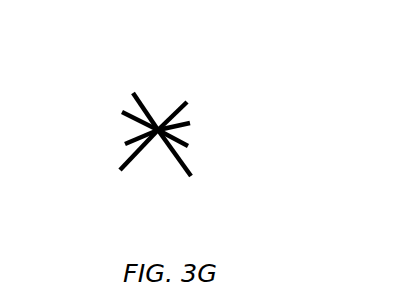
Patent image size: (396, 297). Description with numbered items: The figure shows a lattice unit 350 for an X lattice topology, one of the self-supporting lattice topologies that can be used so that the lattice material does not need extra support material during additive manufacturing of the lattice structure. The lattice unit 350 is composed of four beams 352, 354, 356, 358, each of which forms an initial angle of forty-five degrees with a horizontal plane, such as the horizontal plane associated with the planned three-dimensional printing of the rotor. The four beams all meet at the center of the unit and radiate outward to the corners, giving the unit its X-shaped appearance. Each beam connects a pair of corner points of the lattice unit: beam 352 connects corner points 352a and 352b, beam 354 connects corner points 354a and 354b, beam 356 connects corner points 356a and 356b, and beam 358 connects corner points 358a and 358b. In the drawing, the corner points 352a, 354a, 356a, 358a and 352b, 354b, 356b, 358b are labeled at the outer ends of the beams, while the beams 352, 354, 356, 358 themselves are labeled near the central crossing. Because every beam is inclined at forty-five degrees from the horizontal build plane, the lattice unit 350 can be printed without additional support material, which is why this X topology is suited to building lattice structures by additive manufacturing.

The lattice unit 350 is at (204, 71).
The beam 352 is at (163, 138).
The corner point 352a is at (190, 123).
The corner point 352b is at (125, 144).
The beam 354 is at (181, 149).
The corner point 354a is at (187, 102).
The corner point 354b is at (120, 170).
The beam 356 is at (201, 119).
The corner point 356a is at (133, 93).
The corner point 356b is at (191, 176).
The beam 358 is at (165, 128).
The corner point 358a is at (122, 112).
The corner point 358b is at (188, 146).